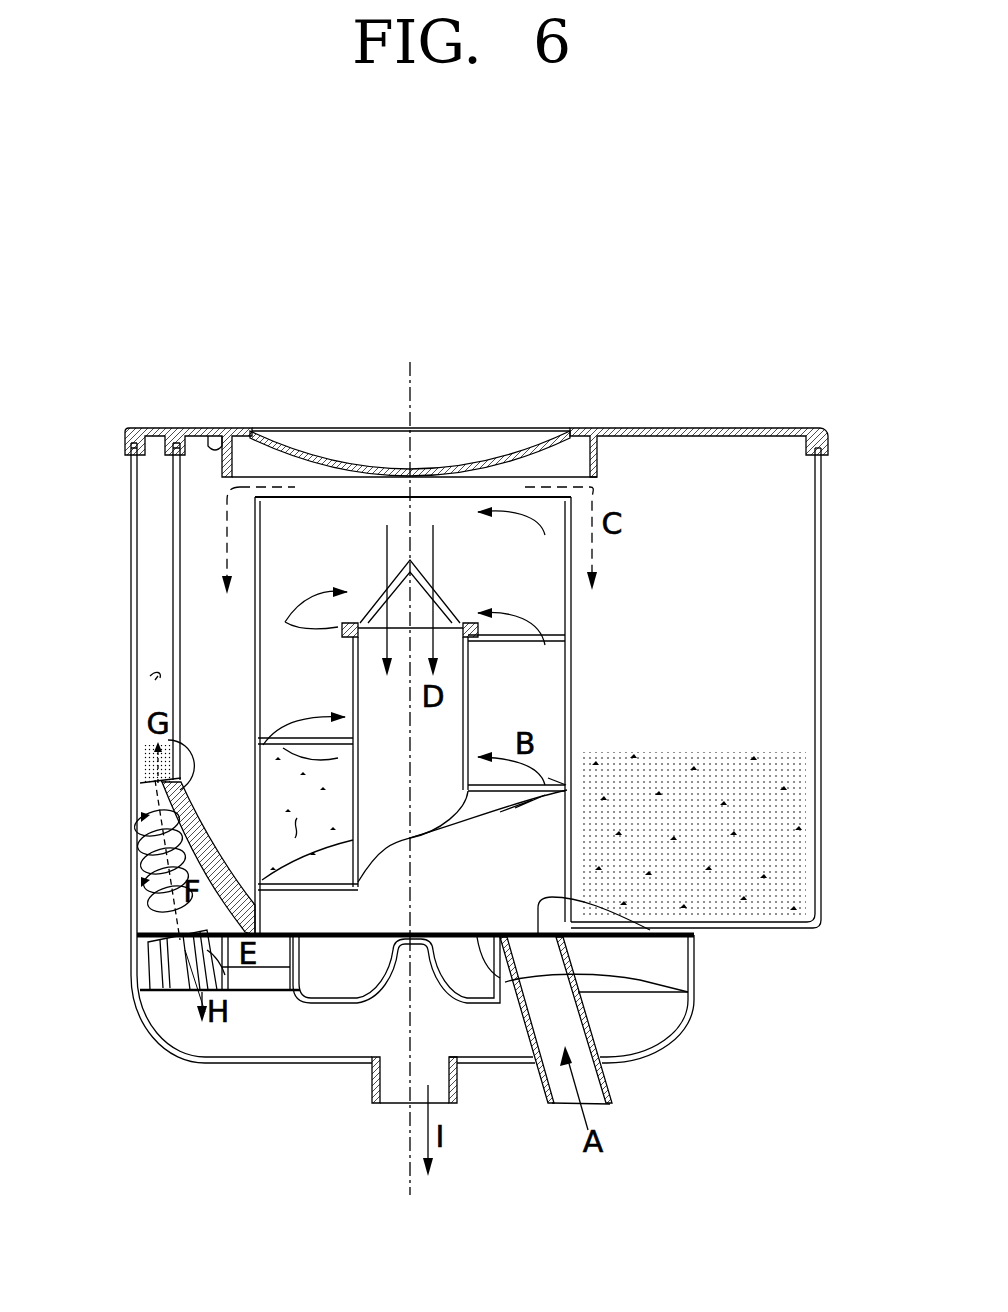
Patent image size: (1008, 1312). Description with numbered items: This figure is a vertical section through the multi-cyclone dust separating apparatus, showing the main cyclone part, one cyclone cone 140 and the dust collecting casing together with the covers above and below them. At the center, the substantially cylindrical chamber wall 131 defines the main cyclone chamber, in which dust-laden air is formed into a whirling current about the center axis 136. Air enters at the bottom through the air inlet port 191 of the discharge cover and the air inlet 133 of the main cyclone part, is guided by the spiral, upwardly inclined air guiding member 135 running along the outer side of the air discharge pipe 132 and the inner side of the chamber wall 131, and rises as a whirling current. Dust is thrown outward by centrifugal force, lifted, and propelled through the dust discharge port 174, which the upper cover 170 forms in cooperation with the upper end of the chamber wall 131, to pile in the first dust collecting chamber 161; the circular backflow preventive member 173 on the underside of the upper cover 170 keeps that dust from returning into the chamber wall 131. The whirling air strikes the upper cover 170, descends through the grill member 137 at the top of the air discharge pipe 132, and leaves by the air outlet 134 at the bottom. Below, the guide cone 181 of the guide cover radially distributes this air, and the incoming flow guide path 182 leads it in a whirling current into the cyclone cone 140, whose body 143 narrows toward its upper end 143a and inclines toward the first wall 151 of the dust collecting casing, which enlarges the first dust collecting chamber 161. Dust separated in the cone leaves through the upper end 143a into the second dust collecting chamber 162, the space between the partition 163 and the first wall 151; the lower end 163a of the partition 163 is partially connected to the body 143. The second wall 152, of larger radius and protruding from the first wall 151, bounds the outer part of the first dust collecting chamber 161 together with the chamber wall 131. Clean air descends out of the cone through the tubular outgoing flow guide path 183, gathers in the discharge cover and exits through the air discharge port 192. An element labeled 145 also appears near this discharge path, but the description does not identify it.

The upper cover 170 is at (714, 420).
The backflow preventive member 173 is at (213, 440).
The dust discharge port 174 is at (240, 486).
The first wall 151 is at (133, 520).
The chamber wall 131 is at (255, 605).
The partition 163 is at (178, 652).
The second dust collecting chamber 162 is at (150, 676).
The lower end of the partition 163a is at (165, 742).
The upper end of the cyclone cone body 143a is at (145, 768).
The first dust collecting chamber 161 is at (210, 806).
The body 143 is at (145, 858).
The cyclone cone 140 is at (143, 880).
The outgoing flow guide path 183 is at (148, 950).
The discharge passage 145 is at (202, 1000).
The incoming flow guide path 182 is at (245, 978).
The guide cone 181 is at (372, 905).
The air discharge port 192 is at (372, 1098).
The center axis 136 is at (414, 1146).
The air inlet port 191 is at (550, 1098).
The grill member 137 is at (447, 607).
The second wall 152 is at (820, 652).
The air discharge pipe 132 is at (470, 723).
The air guiding member 135 is at (550, 782).
The air inlet 133 is at (690, 938).
The air outlet 134 is at (670, 993).